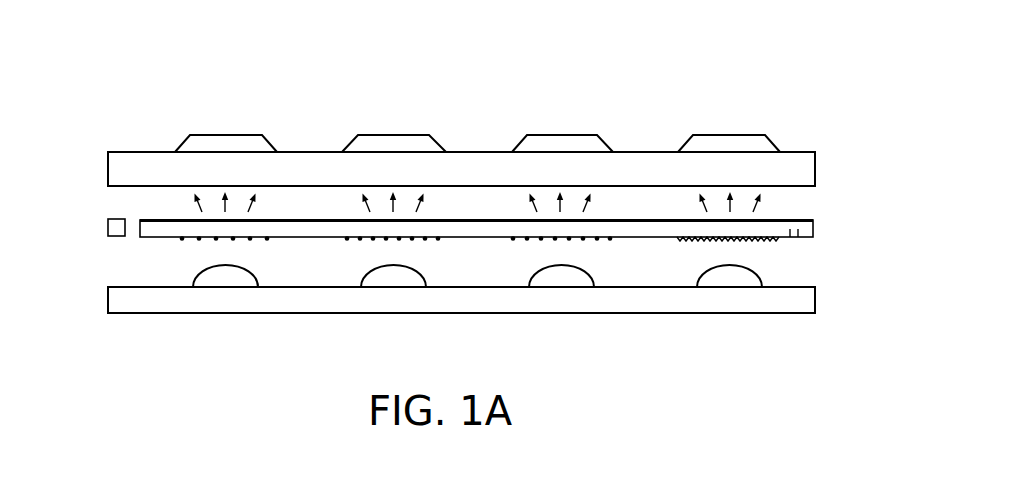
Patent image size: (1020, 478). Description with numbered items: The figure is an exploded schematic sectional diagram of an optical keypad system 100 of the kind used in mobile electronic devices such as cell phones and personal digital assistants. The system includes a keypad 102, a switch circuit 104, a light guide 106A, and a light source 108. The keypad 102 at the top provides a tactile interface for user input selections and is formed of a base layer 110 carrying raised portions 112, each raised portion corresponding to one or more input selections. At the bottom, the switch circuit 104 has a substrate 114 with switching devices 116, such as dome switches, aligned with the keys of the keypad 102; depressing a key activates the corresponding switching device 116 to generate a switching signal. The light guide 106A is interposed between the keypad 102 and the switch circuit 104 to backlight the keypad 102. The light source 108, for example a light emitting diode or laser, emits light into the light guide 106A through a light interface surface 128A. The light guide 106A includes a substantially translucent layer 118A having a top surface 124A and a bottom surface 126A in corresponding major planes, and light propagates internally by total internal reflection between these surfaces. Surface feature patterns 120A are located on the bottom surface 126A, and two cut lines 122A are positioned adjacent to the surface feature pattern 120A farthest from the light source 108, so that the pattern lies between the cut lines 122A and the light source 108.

The optical keypad system 100 is at (208, 49).
The keypad 102 is at (130, 144).
The switch circuit 104 is at (127, 324).
The light guide 106A is at (134, 244).
The light source 108 is at (127, 222).
The base layer 110 is at (800, 170).
The raised portions 112 is at (752, 140).
The substrate 114 is at (800, 301).
The switching devices 116 is at (735, 275).
The substantially translucent layer 118A is at (812, 219).
The surface feature patterns 120A is at (778, 239).
The cut lines 122A is at (824, 229).
The top surface 124A is at (667, 211).
The bottom surface 126A is at (667, 246).
The light interface surface 128A is at (126, 219).